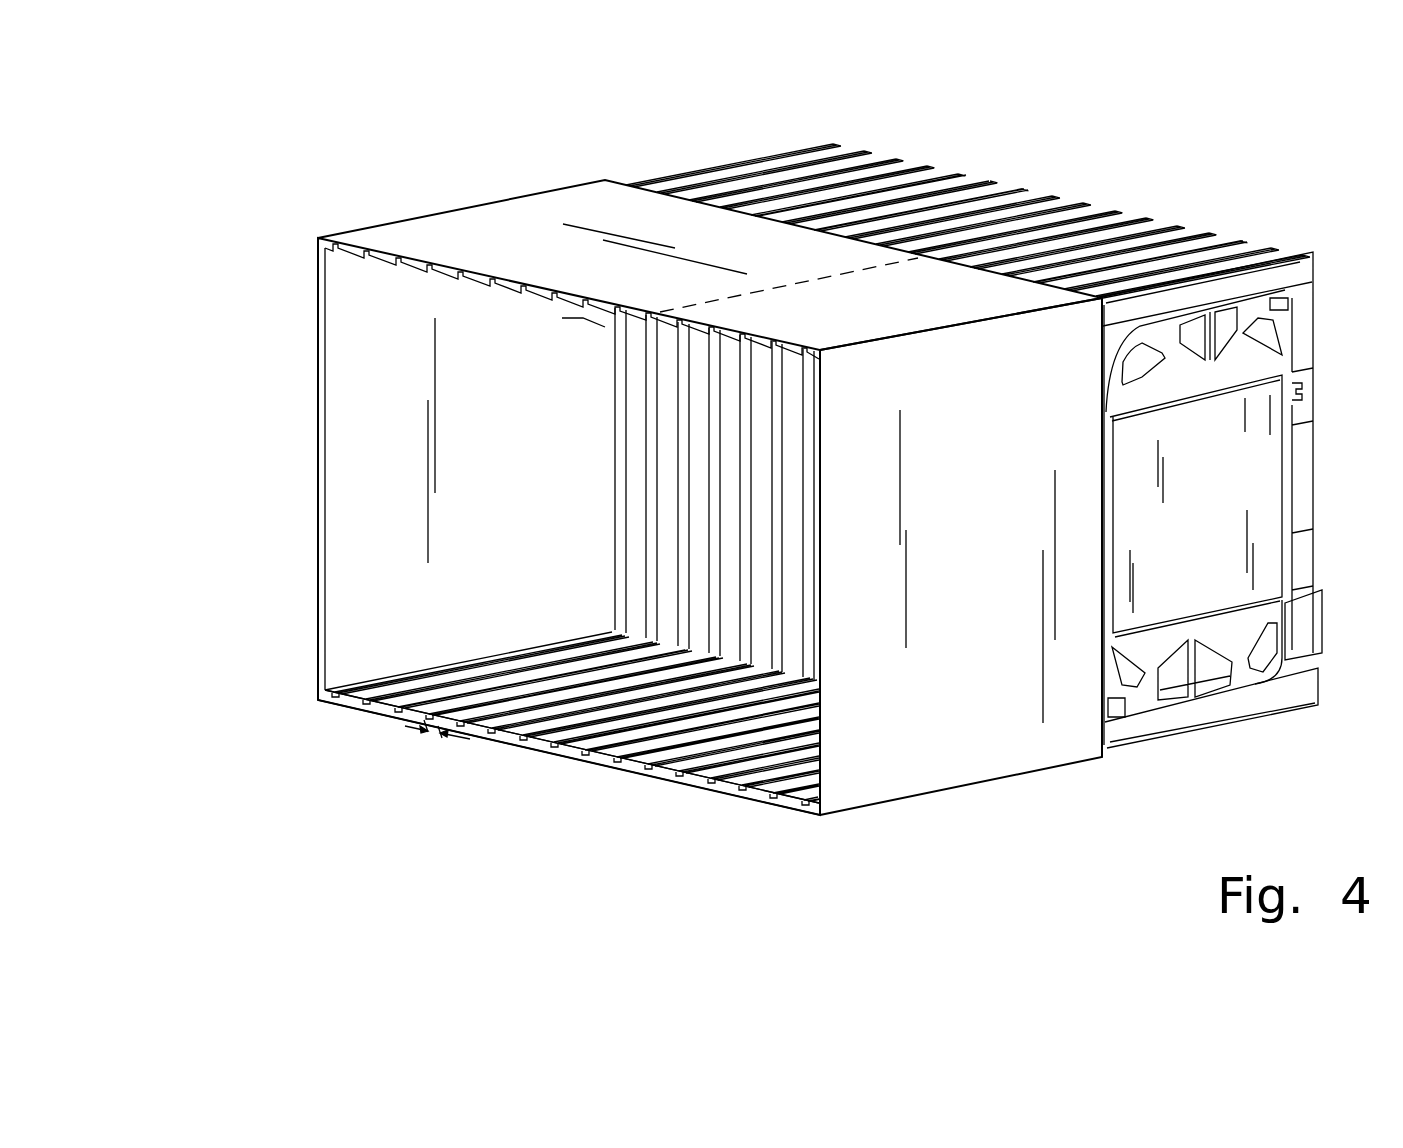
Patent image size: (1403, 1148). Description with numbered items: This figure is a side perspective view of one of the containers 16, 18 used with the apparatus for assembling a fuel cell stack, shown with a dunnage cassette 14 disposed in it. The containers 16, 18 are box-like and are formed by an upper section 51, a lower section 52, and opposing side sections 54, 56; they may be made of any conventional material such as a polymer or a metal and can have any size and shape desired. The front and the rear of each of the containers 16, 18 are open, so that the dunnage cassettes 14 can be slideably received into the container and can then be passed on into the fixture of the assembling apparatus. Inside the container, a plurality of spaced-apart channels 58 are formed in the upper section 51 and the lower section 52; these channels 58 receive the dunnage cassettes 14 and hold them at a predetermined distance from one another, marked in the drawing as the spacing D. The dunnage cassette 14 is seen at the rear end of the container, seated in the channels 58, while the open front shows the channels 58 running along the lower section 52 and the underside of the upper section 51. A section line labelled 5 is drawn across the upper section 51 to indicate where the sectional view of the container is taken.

The dunnage cassette 14 is at (1266, 244).
The container 16 is at (413, 182).
The container 18 is at (749, 494).
The upper section 51 is at (570, 200).
The lower section 52 is at (765, 810).
The side section 54 is at (1070, 720).
The side section 56 is at (372, 448).
The channel 58 is at (587, 753).
The section line 5- 5 is at (741, 297).